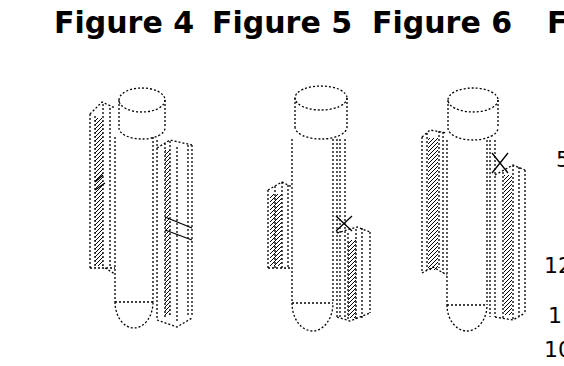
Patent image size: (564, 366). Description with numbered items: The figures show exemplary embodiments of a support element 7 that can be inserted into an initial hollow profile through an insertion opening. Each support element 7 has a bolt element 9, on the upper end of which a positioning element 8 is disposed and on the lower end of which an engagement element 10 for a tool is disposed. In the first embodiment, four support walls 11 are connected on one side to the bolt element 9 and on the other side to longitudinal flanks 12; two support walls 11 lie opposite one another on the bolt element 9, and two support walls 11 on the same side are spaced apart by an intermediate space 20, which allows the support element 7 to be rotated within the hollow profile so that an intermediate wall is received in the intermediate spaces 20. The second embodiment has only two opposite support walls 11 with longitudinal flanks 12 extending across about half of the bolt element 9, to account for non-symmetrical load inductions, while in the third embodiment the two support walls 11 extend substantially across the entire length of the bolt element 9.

In FIG. 4, the support element 7 is at (84, 83).
In FIG. 5, the support element 7 is at (281, 81).
In FIG. 6, the support element 7 is at (431, 79).
In FIG. 4, the positioning element 8 is at (142, 98).
In FIG. 5, the positioning element 8 is at (328, 123).
In FIG. 6, the positioning element 8 is at (488, 118).
In FIG. 4, the bolt element 9 is at (142, 215).
In FIG. 5, the bolt element 9 is at (313, 198).
In FIG. 6, the bolt element 9 is at (465, 267).
In FIG. 4, the engagement element 10 is at (132, 315).
In FIG. 5, the engagement element 10 is at (307, 315).
In FIG. 6, the engagement element 10 is at (460, 320).
In FIG. 4, the support wall 11 is at (112, 157).
In FIG. 5, the support wall 11 is at (342, 260).
In FIG. 6, the support wall 11 is at (495, 170).
In FIG. 4, the longitudinal flank 12 is at (97, 141).
In FIG. 5, the longitudinal flank 12 is at (275, 183).
In FIG. 6, the longitudinal flank 12 is at (421, 167).
In FIG. 4, the intermediate space 20 is at (82, 194).